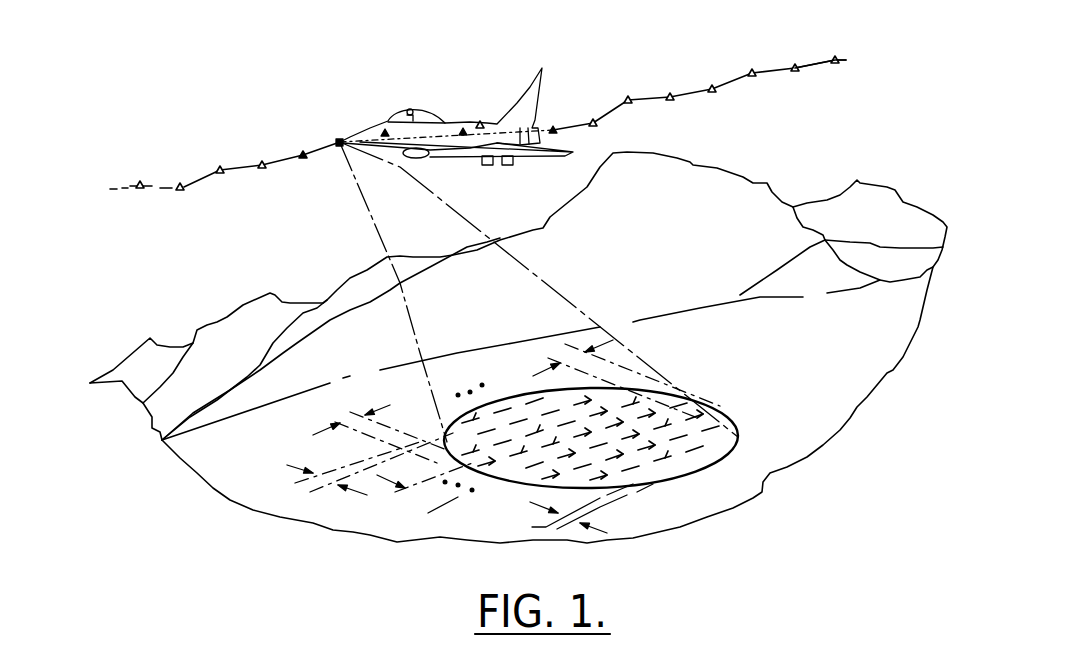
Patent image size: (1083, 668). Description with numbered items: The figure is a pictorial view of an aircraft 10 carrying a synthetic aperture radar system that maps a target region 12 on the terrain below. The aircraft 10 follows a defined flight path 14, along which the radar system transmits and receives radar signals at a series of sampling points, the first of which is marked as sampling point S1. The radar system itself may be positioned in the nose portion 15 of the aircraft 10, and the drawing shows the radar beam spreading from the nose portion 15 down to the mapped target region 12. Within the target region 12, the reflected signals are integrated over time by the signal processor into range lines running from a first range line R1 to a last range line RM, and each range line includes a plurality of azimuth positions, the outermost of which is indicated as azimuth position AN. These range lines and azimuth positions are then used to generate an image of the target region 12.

The aircraft 10 is at (457, 157).
The target region 12 is at (738, 405).
The flight path 14 is at (245, 165).
The nose portion 15 is at (340, 141).
The sampling point S1 is at (833, 58).
The azimuth position AN is at (516, 401).
The range line R1 is at (310, 483).
The range line RM is at (448, 507).